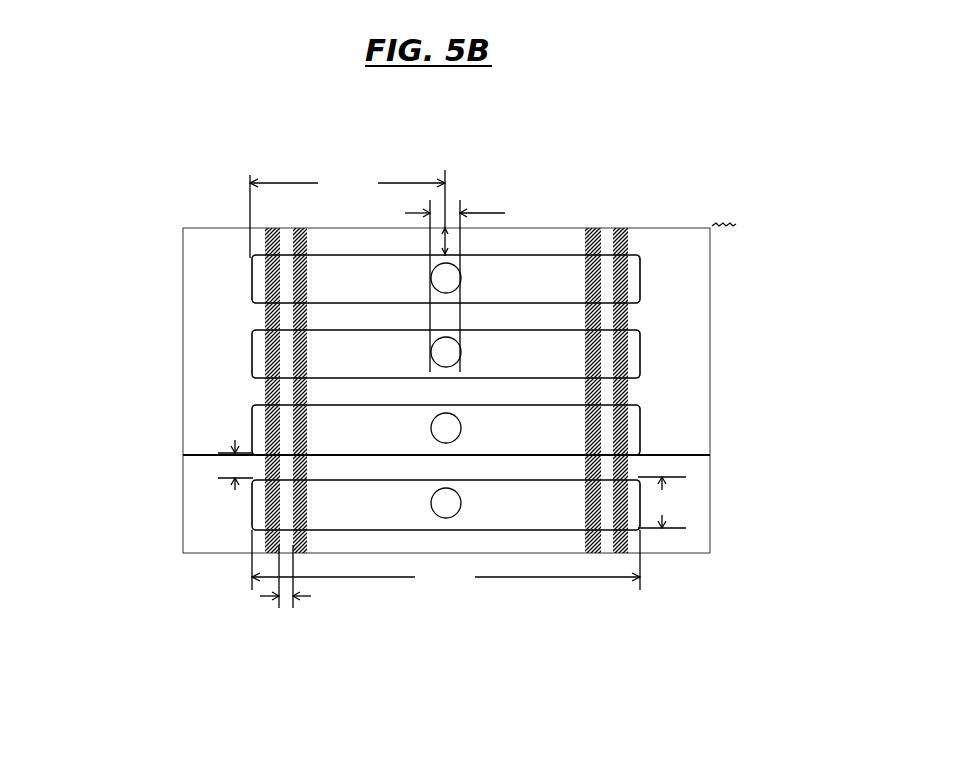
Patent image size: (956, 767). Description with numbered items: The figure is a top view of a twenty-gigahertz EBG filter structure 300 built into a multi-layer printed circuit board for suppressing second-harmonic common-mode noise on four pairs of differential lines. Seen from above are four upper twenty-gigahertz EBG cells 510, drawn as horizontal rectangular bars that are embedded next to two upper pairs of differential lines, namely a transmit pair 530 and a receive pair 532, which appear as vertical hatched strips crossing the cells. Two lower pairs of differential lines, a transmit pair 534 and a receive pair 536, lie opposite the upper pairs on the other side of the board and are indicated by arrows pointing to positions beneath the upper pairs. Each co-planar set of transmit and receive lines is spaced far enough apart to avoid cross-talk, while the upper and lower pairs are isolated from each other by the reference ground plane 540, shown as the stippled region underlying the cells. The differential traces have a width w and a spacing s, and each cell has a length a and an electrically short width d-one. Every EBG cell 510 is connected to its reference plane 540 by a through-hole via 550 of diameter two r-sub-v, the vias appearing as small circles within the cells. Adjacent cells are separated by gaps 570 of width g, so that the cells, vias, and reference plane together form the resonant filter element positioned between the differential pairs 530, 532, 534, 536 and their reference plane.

The printed circuit board structure 300 is at (750, 116).
The upper 20-GHz EBG cells 510 is at (567, 507).
The upper pair of differential lines (TX) 530 is at (289, 178).
The upper pair of differential lines (RX) 532 is at (610, 206).
The lower pair of differential lines (TX) 534 is at (278, 626).
The lower pair of differential lines (RX) 536 is at (607, 608).
The reference ground plane Ref 1 540 is at (205, 531).
The through-hole vias 550 is at (434, 503).
The gaps 570 is at (513, 315).